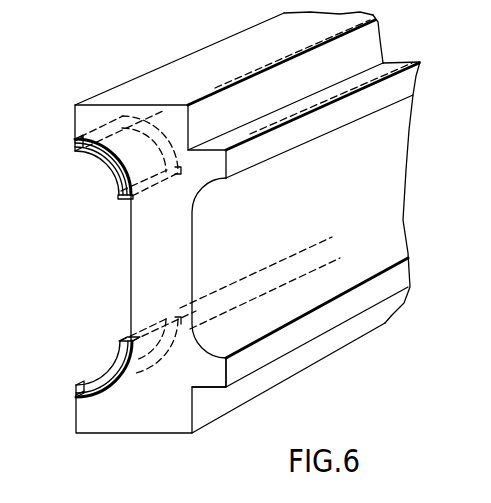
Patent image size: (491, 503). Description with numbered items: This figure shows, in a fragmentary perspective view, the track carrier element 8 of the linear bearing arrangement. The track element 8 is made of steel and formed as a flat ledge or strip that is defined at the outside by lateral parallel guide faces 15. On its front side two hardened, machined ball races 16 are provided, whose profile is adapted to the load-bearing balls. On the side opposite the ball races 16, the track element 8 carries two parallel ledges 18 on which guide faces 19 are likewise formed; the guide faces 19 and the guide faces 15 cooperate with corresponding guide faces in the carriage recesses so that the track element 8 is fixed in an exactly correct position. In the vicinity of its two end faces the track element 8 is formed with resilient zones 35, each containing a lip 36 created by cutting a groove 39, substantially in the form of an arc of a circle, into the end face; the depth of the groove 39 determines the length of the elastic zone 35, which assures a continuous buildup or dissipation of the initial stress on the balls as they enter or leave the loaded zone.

The track carrier element 8 is at (148, 110).
The lateral parallel guide faces 15 is at (93, 105).
The ball races 16 is at (102, 166).
The parallel ledges 18 is at (280, 142).
The guide faces 19 is at (212, 389).
The resilient zone 35 is at (119, 338).
The lip 36 is at (77, 145).
The groove 39 is at (103, 150).